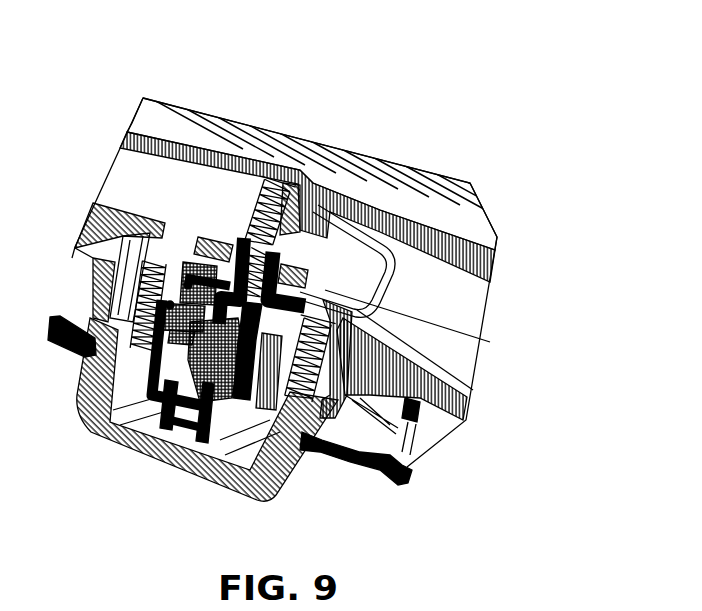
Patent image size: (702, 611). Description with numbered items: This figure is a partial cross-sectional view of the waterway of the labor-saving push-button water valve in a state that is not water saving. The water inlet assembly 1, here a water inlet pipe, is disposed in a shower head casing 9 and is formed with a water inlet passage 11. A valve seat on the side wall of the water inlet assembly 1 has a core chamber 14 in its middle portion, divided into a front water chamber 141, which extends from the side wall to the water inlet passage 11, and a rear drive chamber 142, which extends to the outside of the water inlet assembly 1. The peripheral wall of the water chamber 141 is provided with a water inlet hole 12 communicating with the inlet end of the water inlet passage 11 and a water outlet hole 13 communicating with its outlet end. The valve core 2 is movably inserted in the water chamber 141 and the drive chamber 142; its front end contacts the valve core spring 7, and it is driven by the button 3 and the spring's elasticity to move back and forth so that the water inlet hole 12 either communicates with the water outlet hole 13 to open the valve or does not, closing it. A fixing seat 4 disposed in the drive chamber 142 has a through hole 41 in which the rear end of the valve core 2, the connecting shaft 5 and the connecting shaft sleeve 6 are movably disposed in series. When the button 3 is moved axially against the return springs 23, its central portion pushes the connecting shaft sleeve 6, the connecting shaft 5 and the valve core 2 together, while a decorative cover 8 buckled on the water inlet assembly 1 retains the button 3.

The water inlet assembly 1 is at (396, 211).
The valve core 2 is at (215, 230).
The button 3 is at (187, 467).
The fixing seat 4 is at (158, 272).
The connecting shaft 5 is at (207, 467).
The connecting shaft sleeve 6 is at (152, 423).
The valve core spring 7 is at (285, 182).
The decorative cover 8 is at (413, 477).
The shower head casing 9 is at (168, 110).
The water inlet passage 11 is at (407, 268).
The water inlet hole 12 is at (367, 217).
The water outlet hole 13 is at (240, 178).
The core chamber 14 is at (577, 380).
The water chamber 141 is at (490, 342).
The drive chamber 142 is at (473, 390).
The return spring 23 is at (355, 460).
The through hole 41 is at (312, 453).